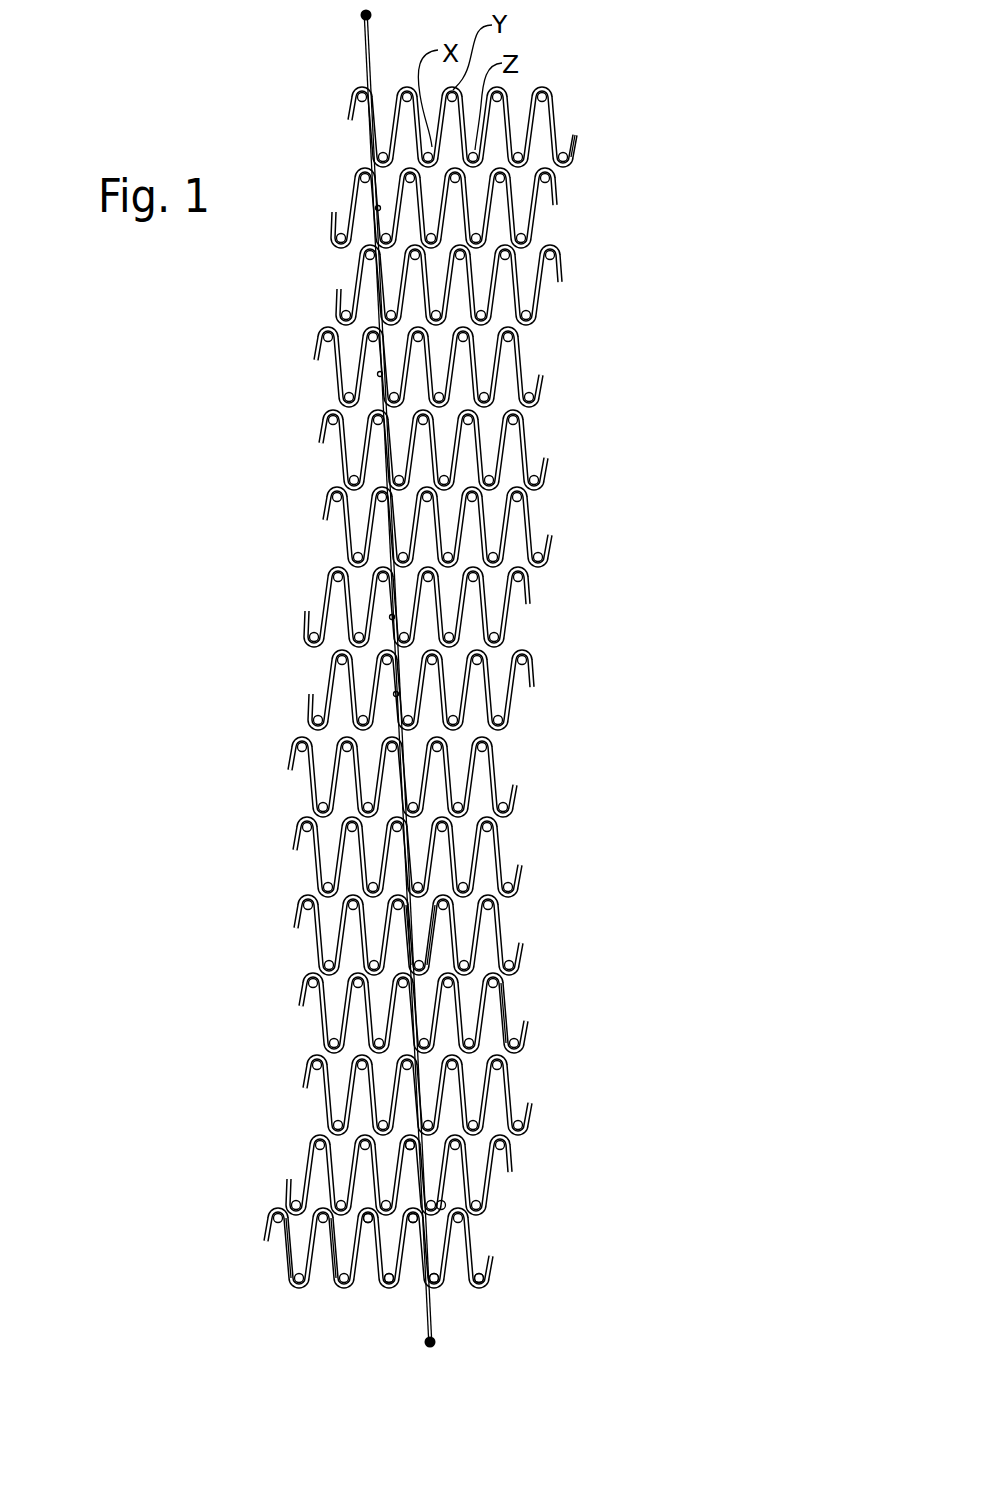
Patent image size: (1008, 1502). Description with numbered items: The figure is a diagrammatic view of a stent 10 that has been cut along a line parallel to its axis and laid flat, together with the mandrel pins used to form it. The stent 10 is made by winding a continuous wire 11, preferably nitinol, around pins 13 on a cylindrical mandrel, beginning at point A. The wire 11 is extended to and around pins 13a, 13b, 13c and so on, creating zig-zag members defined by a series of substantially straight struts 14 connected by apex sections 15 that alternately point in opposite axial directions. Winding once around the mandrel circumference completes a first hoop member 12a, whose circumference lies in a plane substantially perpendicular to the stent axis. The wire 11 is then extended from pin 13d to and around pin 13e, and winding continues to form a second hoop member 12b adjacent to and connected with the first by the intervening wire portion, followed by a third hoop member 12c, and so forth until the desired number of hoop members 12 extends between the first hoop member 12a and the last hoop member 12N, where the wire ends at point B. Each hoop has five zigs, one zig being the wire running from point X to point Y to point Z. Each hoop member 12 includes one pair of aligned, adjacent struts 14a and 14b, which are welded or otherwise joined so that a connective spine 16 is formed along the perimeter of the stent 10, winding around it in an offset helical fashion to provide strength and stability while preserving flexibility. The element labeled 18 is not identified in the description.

The stent 10 is at (398, 687).
The wire 11 is at (430, 1315).
The hoop members 12 is at (570, 214).
The last hoop member 12N is at (592, 122).
The first hoop member 12a is at (545, 1249).
The second hoop member 12b is at (543, 1183).
The third hoop member 12c is at (552, 1103).
The pins 13 is at (512, 973).
The pin 13a is at (413, 1226).
The pin 13b is at (392, 1284).
The pin 13c is at (368, 1210).
The pin 13d is at (440, 1285).
The pin 13e is at (414, 1136).
The struts 14 is at (343, 1263).
The aligned adjacent strut 14a is at (396, 937).
The aligned adjacent strut 14b is at (427, 930).
The apex sections 15 is at (440, 1208).
The connective spine 16 is at (386, 694).
The end strut 18 is at (602, 158).